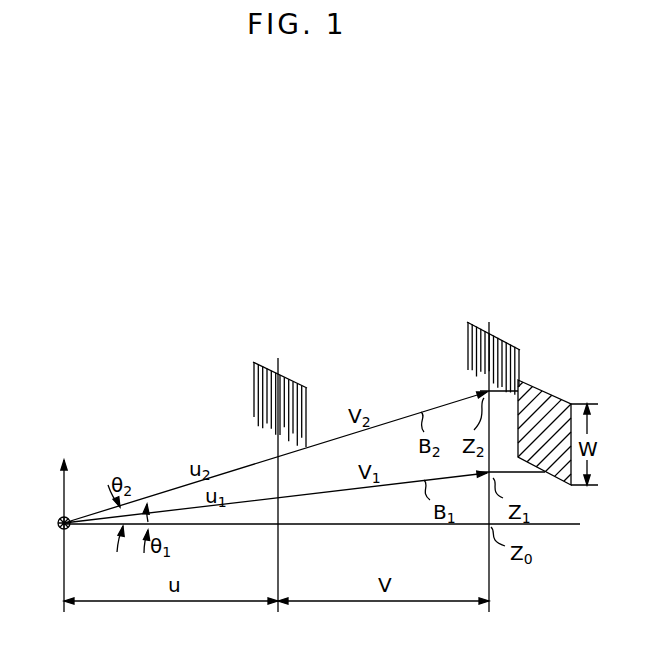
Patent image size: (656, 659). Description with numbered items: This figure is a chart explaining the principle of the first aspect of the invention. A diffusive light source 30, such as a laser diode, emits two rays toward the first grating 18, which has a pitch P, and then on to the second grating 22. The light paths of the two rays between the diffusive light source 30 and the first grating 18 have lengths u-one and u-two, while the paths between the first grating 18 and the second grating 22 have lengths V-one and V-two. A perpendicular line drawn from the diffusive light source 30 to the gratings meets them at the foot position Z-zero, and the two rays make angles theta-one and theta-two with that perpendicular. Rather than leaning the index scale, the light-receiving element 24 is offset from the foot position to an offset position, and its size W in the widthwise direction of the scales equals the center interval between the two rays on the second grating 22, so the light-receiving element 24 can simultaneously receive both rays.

The first grating 18 is at (301, 385).
The second grating 22 is at (510, 340).
The light-receiving element 24 is at (551, 392).
The diffusive light source 30 is at (57, 518).